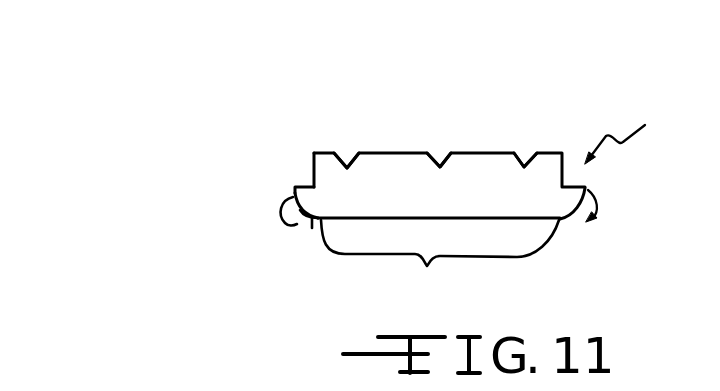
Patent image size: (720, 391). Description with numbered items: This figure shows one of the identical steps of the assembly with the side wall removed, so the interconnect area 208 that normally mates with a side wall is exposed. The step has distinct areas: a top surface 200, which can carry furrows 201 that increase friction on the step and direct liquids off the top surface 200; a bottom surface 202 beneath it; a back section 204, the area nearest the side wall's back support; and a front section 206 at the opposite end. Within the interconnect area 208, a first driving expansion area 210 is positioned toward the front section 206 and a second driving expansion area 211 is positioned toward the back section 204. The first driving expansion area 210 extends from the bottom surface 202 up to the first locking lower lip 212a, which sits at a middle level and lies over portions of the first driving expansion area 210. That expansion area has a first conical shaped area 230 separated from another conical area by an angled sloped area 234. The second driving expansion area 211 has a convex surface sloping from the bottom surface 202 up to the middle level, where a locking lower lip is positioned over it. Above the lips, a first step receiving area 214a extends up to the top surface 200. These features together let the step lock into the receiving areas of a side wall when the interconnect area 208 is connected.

The top surface 200 is at (402, 152).
The furrows 201 is at (343, 150).
The bottom surface 202 is at (440, 257).
The back section 204 is at (585, 187).
The front section 206 is at (293, 191).
The interconnect area 208 is at (639, 134).
The first driving expansion area 210 is at (297, 223).
The second driving expansion area 211 is at (616, 216).
The first locking lower lip 212a is at (305, 187).
The first step receiving area 214a is at (314, 167).
The first conical shaped area 230 is at (306, 222).
The angled sloped area 234 is at (313, 220).